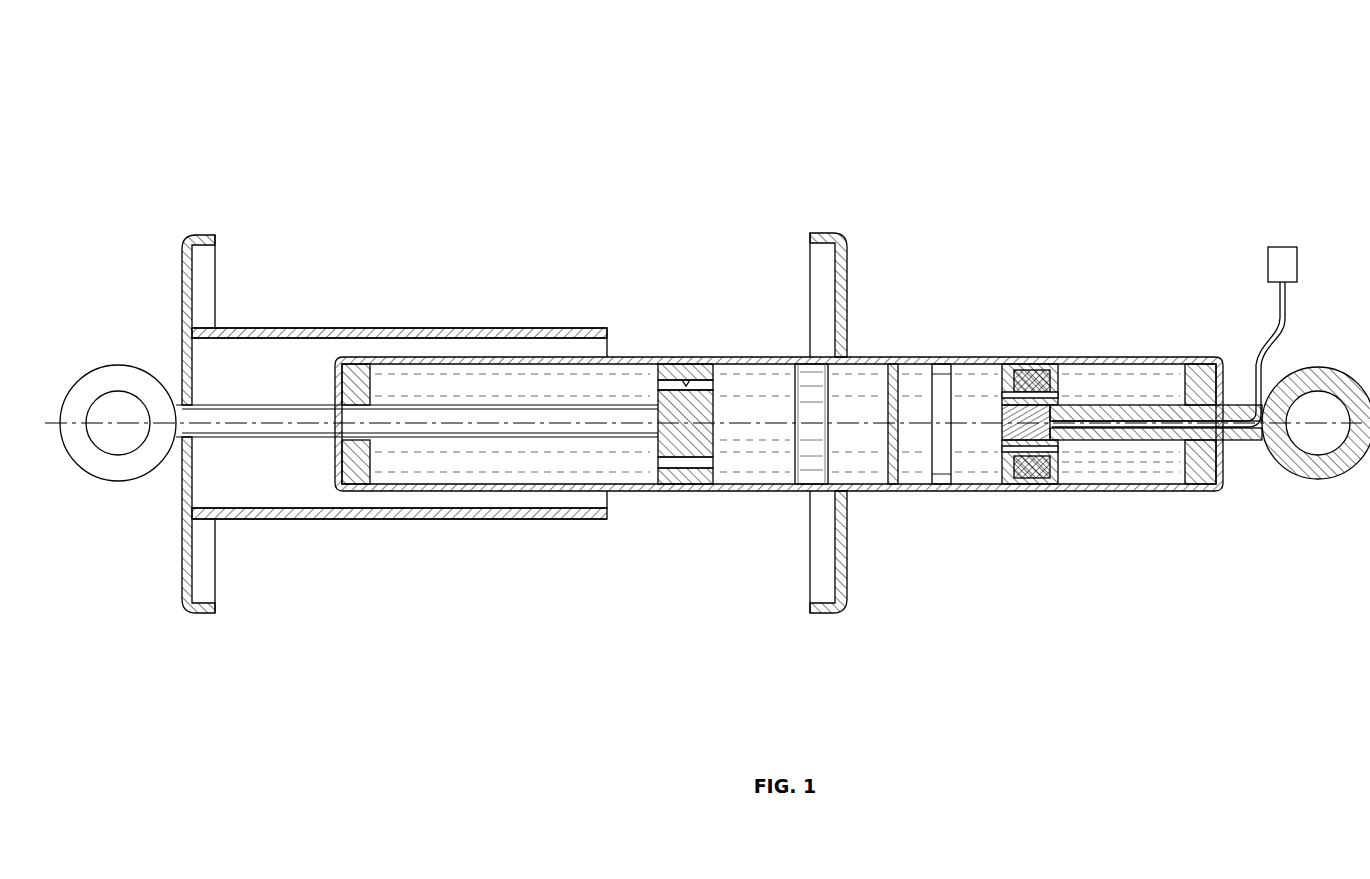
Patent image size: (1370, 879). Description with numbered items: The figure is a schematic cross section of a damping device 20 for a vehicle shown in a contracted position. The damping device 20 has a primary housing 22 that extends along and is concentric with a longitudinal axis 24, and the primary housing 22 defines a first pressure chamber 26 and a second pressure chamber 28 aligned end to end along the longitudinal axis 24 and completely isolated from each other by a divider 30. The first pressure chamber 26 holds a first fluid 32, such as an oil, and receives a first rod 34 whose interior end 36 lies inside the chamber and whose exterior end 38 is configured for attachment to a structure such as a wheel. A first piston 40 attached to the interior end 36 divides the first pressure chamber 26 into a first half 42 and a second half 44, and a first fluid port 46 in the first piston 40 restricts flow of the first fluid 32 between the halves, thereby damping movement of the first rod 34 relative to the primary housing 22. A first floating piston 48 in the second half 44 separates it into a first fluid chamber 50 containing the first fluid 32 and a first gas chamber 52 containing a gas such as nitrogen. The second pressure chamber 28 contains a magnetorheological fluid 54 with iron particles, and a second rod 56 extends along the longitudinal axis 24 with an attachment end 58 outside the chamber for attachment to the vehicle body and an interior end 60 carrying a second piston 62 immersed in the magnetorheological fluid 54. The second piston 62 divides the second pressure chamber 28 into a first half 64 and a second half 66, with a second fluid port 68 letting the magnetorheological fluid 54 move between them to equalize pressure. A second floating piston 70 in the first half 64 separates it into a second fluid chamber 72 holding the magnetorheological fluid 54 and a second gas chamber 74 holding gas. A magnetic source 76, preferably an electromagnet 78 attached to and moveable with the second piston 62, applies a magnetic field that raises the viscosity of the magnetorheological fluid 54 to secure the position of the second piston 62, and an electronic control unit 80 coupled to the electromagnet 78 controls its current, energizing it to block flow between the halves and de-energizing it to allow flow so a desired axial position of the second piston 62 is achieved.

The damping device 20 is at (1086, 151).
The primary housing 22 is at (662, 350).
The longitudinal axis 24 is at (52, 417).
The first pressure chamber 26 is at (626, 470).
The second pressure chamber 28 is at (1143, 458).
The divider 30 is at (893, 480).
The first fluid 32 is at (582, 423).
The first rod 34 is at (465, 437).
The interior end 36 is at (672, 484).
The exterior end 38 is at (103, 470).
The first piston 40 is at (718, 452).
The first half 42 is at (553, 370).
The second half 44 is at (776, 378).
The first fluid port 46 is at (696, 380).
The first floating piston 48 is at (808, 458).
The first fluid chamber 50 is at (757, 463).
The first gas chamber 52 is at (867, 470).
The magnetorheological fluid 54 is at (1069, 388).
The second rod 56 is at (1187, 440).
The attachment end 58 is at (1322, 480).
The interior end 60 is at (997, 435).
The second piston 62 is at (1082, 378).
The first half 64 is at (965, 470).
The second half 66 is at (1100, 468).
The second fluid port 68 is at (1018, 370).
The second floating piston 70 is at (945, 372).
The second fluid chamber 72 is at (992, 375).
The second gas chamber 74 is at (912, 467).
The magnetic source 76 is at (1060, 455).
The electromagnet 78 is at (1028, 475).
The electronic control unit 80 is at (1299, 263).